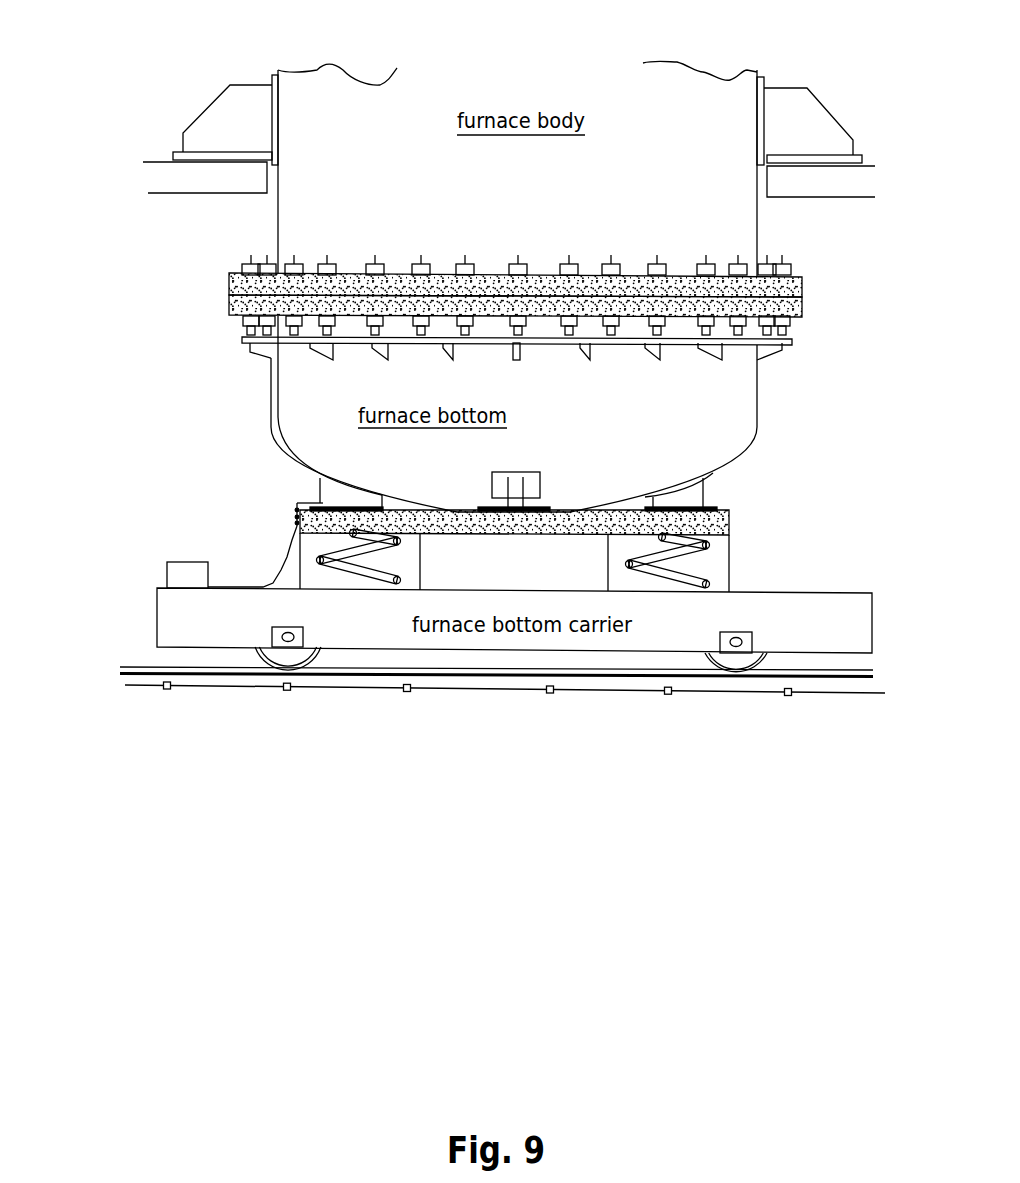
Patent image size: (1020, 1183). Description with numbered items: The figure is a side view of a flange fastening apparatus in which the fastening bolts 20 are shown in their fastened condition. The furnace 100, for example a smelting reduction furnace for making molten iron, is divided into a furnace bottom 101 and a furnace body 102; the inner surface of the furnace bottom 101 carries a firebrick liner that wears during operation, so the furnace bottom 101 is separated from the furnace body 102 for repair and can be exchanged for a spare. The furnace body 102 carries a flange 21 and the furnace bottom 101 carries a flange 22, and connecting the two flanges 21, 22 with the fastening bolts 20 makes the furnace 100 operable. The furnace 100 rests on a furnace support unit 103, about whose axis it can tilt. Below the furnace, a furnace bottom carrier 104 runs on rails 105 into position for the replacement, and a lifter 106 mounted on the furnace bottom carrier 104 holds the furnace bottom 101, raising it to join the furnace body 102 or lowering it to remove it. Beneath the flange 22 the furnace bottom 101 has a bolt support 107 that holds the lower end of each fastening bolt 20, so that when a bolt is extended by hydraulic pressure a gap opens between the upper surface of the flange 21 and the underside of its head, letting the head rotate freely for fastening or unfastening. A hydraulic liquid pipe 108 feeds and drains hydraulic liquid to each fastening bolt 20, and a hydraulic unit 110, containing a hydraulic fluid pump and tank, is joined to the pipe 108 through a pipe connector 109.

The fastening bolt 20 is at (702, 232).
The flange 21 is at (882, 243).
The flange 22 is at (890, 363).
The furnace 100 is at (158, 222).
The furnace bottom 101 is at (265, 360).
The furnace body 102 is at (297, 234).
The furnace support unit 103 is at (887, 65).
The furnace bottom carrier 104 is at (800, 610).
The rail 105 is at (576, 693).
The lifter 106 is at (813, 496).
The bolt support 107 is at (668, 422).
The hydraulic liquid pipe 108 is at (268, 373).
The pipe connector 109 is at (240, 578).
The hydraulic unit 110 is at (186, 560).